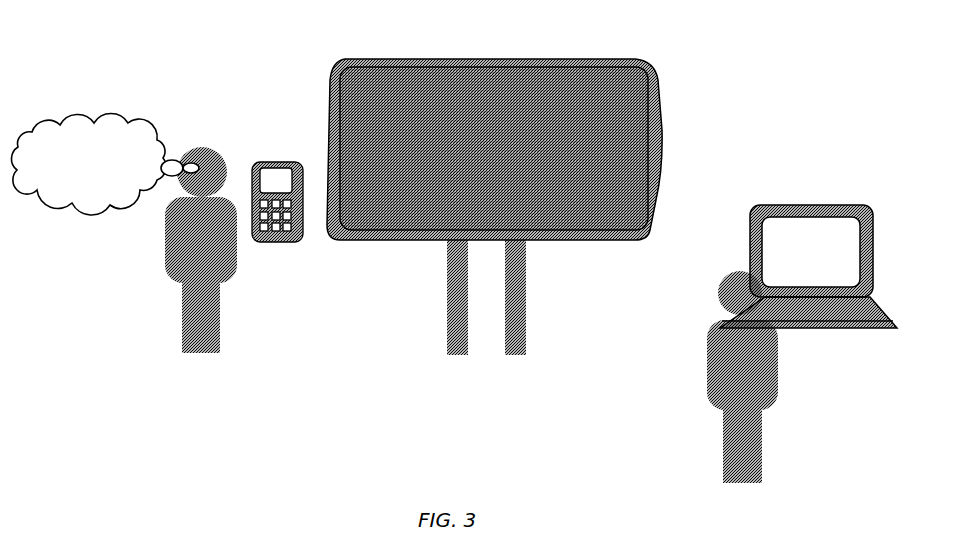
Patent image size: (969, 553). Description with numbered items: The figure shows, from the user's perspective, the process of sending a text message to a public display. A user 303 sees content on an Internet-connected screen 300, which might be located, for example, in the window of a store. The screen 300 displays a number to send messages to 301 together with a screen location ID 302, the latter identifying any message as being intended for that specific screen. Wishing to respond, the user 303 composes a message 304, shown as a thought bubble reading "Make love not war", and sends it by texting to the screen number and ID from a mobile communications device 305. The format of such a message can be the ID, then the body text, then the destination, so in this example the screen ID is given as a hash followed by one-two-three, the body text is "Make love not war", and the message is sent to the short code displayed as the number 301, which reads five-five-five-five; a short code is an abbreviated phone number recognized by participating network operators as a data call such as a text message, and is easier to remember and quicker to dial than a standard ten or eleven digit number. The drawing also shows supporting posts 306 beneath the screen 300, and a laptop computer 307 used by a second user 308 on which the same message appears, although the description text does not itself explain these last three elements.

The Internet-connected screen 300 is at (341, 63).
The number to send messages to 301 is at (492, 58).
The screen location ID 302 is at (599, 62).
The user 303 is at (192, 150).
The message 304 is at (43, 126).
The mobile communications device 305 is at (270, 172).
The support posts 306 is at (423, 241).
The laptop computer 307 is at (779, 206).
The second user 308 is at (721, 286).